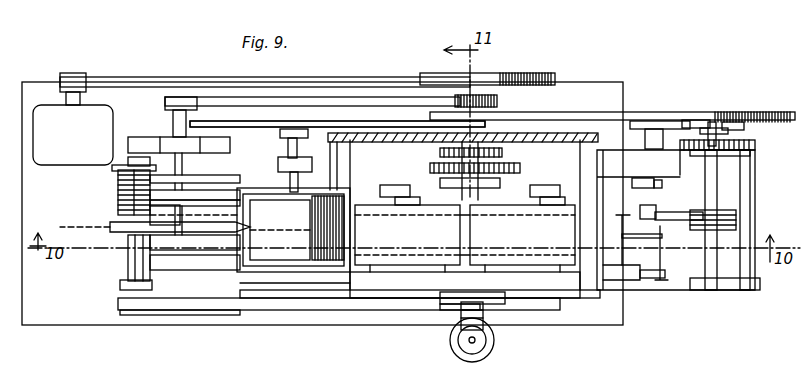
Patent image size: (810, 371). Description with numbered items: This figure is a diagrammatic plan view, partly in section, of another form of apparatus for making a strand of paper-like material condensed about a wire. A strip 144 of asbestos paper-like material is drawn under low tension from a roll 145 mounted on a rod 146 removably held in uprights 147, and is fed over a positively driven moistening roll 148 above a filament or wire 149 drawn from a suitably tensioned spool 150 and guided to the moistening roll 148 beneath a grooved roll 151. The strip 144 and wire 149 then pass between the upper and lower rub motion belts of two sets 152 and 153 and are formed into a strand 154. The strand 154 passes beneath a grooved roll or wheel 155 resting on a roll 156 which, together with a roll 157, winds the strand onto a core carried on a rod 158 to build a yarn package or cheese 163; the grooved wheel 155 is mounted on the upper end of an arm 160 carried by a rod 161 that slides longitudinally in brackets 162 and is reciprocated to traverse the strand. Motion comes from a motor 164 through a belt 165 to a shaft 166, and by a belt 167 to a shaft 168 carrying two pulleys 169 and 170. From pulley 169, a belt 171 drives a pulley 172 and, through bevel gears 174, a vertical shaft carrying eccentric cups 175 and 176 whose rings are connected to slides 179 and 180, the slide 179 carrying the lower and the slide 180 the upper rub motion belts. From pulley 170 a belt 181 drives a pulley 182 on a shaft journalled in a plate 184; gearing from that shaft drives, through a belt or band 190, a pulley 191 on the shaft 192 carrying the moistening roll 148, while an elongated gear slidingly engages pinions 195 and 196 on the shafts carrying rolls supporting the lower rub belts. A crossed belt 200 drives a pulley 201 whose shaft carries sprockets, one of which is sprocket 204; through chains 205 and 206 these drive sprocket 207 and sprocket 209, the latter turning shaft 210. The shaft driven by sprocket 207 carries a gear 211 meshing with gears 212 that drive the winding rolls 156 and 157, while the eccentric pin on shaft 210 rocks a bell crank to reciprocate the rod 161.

The strip 144 is at (312, 228).
The roll 145 is at (110, 228).
The rod 146 is at (128, 260).
The uprights 147 is at (140, 157).
The moistening roll 148 is at (292, 270).
The filament or wire 149 is at (279, 230).
The spool 150 is at (118, 186).
The grooved roll 151 is at (232, 232).
The set of rub motion belts 152 is at (452, 262).
The set of rub motion belts 153 is at (392, 192).
The strand 154 is at (621, 228).
The grooved roll or wheel 155 is at (661, 244).
The roll 156 is at (690, 285).
The roll 157 is at (742, 288).
The rod 158 is at (722, 240).
The arm 160 is at (662, 198).
The rod 161 is at (622, 236).
The brackets 162 is at (632, 180).
The yarn package or cheese 163 is at (718, 216).
The motor 164 is at (73, 128).
The belt 165 is at (160, 77).
The shaft 166 is at (462, 93).
The belt 167 is at (165, 192).
The shaft 168 is at (195, 183).
The pulley 169 is at (158, 311).
The pulley 170 is at (180, 97).
The belt 171 is at (288, 298).
The pulley 172 is at (498, 298).
The bevel gears 174 is at (440, 308).
The eccentric cup 175 is at (486, 320).
The eccentric cup 176 is at (495, 344).
The slide 179 is at (487, 171).
The slide 180 is at (385, 296).
The belt 181 is at (497, 101).
The pulley 182 is at (478, 93).
The plate 184 is at (532, 132).
The belt or band 190 is at (412, 121).
The pulley 191 is at (310, 121).
The shaft 192 is at (280, 142).
The pinion 195 is at (440, 152).
The pinion 196 is at (490, 164).
The crossed belt 200 is at (596, 112).
The pulley 201 is at (750, 110).
The sprocket 204 is at (702, 127).
The chain 205 is at (735, 121).
The chain 206 is at (686, 119).
The sprocket 207 is at (713, 121).
The sprocket 209 is at (652, 120).
The shaft 210 is at (654, 184).
The gear 211 is at (750, 144).
The gears 212 is at (748, 153).